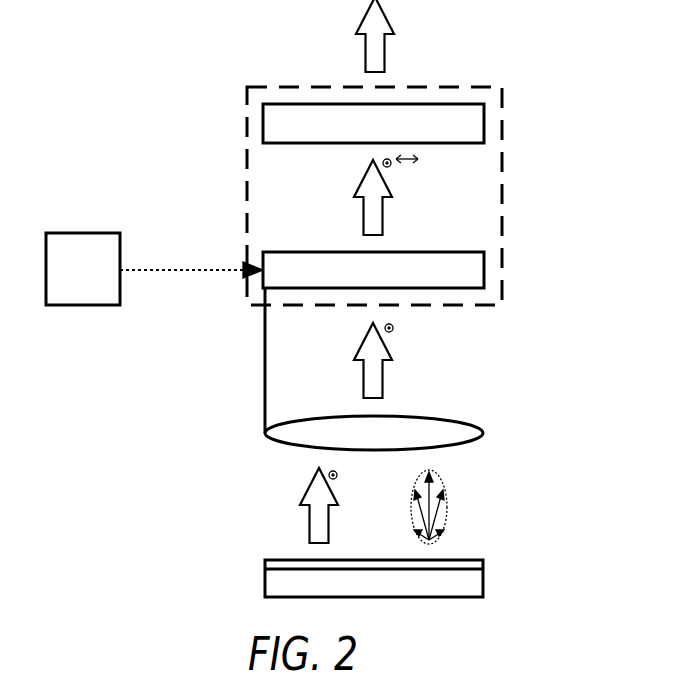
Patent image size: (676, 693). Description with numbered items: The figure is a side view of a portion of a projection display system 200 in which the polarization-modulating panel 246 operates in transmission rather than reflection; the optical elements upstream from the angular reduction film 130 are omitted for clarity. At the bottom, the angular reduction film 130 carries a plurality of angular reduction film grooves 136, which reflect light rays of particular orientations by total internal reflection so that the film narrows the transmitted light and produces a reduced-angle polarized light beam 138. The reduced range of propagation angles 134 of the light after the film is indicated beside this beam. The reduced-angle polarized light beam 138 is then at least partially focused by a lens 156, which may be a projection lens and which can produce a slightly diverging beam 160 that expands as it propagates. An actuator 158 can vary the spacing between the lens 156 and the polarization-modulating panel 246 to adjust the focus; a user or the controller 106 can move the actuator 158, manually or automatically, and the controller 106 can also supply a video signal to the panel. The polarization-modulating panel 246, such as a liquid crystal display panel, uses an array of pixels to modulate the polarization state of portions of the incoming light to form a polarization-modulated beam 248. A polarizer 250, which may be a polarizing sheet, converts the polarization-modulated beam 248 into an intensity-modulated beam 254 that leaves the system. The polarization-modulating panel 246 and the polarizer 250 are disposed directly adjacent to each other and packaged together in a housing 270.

The projection display system 200 is at (172, 66).
The intensity-modulated beam 254 is at (356, 14).
The polarizer 250 is at (484, 122).
The polarization-modulated beam 248 is at (357, 180).
The housing 270 is at (502, 195).
The polarization-modulating panel 246 is at (484, 269).
The controller 106 is at (82, 306).
The actuator 158 is at (264, 360).
The slightly diverging beam 160 is at (357, 342).
The lens 156 is at (483, 433).
The reduced-angle polarized light beam 138 is at (306, 485).
The range of propagation angles 134 is at (448, 507).
The angular reduction film grooves 136 is at (265, 565).
The angular reduction film 130 is at (483, 578).